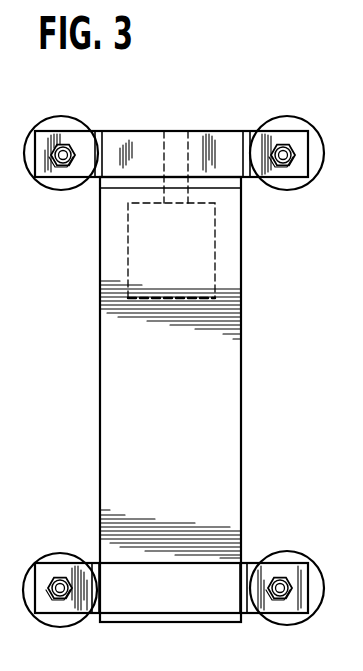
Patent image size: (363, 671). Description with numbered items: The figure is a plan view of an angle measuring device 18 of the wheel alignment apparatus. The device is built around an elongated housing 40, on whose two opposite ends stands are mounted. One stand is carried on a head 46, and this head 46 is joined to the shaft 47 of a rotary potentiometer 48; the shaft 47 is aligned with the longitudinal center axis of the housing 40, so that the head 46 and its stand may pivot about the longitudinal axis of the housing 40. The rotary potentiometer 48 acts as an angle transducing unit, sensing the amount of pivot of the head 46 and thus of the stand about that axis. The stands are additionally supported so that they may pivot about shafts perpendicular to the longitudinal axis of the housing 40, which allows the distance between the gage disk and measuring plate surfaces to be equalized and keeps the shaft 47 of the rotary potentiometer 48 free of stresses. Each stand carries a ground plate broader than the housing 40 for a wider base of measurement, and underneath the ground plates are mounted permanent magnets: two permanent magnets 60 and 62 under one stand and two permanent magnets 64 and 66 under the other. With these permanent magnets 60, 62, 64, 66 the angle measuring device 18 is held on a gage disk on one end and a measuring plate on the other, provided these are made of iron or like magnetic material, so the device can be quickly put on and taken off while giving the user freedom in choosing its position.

The angle measuring device 18 is at (75, 329).
The housing 40 is at (230, 470).
The head 46 is at (206, 140).
The shaft 47 is at (172, 182).
The rotary potentiometer 48 is at (203, 282).
The permanent magnet 60 is at (62, 558).
The permanent magnet 62 is at (290, 555).
The permanent magnet 64 is at (282, 186).
The permanent magnet 66 is at (50, 172).